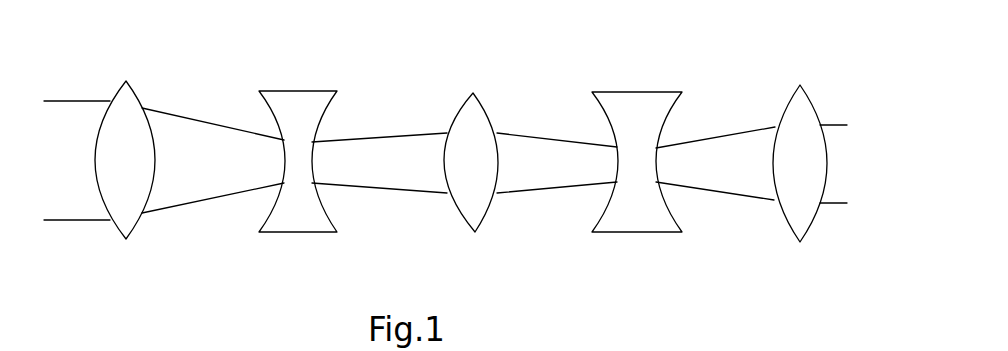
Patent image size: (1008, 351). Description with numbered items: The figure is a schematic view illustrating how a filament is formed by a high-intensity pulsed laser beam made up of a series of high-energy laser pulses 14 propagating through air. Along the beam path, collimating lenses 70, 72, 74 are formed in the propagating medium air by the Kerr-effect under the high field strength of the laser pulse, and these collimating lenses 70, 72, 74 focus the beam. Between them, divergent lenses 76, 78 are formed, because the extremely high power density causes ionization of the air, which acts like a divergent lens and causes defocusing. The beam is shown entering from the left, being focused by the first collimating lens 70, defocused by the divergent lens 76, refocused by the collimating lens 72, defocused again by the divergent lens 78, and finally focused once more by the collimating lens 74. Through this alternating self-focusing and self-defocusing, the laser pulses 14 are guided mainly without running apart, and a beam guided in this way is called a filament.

The laser pulses 14 is at (72, 100).
The collimating lens 70 is at (132, 122).
The divergent lens 76 is at (283, 102).
The collimating lens 72 is at (473, 213).
The divergent lens 78 is at (630, 105).
The collimating lens 74 is at (798, 108).